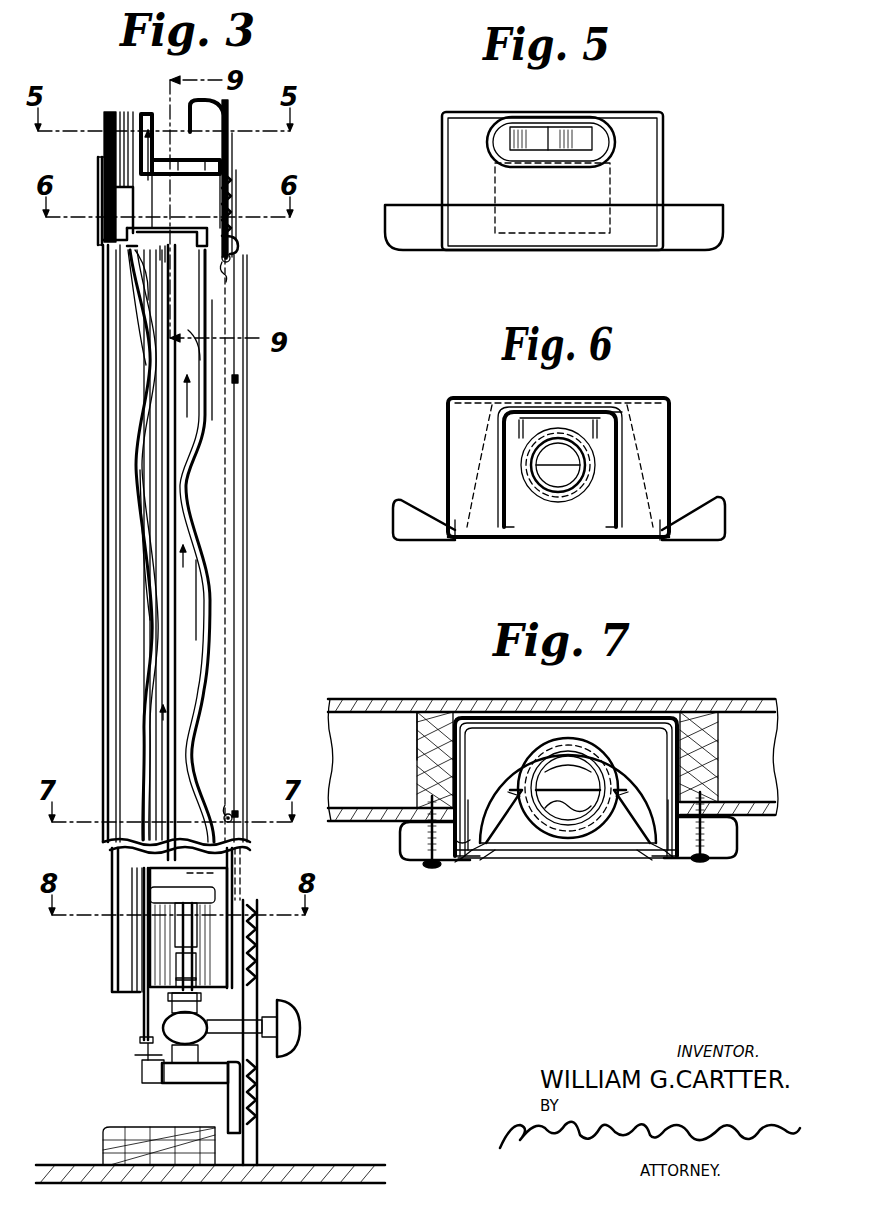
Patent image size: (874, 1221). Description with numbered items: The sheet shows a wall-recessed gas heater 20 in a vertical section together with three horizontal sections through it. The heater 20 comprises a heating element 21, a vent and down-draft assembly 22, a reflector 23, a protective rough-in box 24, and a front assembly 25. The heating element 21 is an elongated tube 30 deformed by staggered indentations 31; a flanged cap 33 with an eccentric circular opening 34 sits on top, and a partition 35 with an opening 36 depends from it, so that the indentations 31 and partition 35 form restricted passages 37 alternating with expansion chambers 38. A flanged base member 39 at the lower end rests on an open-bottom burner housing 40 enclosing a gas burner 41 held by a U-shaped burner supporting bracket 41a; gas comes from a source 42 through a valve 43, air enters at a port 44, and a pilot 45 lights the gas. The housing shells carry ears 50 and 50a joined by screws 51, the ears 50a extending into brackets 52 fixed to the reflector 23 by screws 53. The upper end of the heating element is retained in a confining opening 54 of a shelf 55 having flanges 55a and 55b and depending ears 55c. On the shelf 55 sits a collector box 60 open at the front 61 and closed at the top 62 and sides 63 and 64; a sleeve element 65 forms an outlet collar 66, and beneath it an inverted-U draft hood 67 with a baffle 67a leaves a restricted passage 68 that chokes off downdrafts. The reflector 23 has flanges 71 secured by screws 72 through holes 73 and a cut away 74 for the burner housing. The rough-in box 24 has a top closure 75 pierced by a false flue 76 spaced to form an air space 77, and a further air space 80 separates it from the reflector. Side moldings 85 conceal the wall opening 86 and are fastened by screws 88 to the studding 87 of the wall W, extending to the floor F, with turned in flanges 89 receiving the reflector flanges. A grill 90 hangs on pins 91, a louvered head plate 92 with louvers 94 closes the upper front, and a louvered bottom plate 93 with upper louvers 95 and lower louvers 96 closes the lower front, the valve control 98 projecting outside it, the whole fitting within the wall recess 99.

In FIG. 3, the heater 20 is at (248, 486).
In FIG. 5, the heater 20 is at (624, 248).
In FIG. 6, the heater 20 is at (562, 543).
In FIG. 7, the heater 20 is at (582, 860).
In FIG. 3, the heating element 21 is at (216, 402).
In FIG. 3, the vent and down-draft assembly 22 is at (230, 185).
In FIG. 3, the reflector 23 is at (114, 404).
In FIG. 6, the reflector 23 is at (488, 440).
In FIG. 7, the reflector 23 is at (545, 736).
In FIG. 3, the rough-in box 24 is at (103, 450).
In FIG. 5, the rough-in box 24 is at (479, 112).
In FIG. 6, the rough-in box 24 is at (490, 400).
In FIG. 7, the rough-in box 24 is at (590, 728).
In FIG. 3, the front assembly 25 is at (236, 427).
In FIG. 3, the tube 30 is at (213, 605).
In FIG. 7, the tube 30 is at (523, 754).
In FIG. 3, the indentations 31 is at (194, 733).
In FIG. 7, the indentations 31 is at (560, 805).
In FIG. 3, the annular flanged cap 33 is at (162, 248).
In FIG. 6, the annular flanged cap 33 is at (551, 482).
In FIG. 3, the circular opening 34 is at (166, 240).
In FIG. 6, the circular opening 34 is at (562, 482).
In FIG. 3, the partition 35 is at (162, 316).
In FIG. 6, the partition 35 is at (548, 478).
In FIG. 7, the partition 35 is at (582, 762).
In FIG. 3, the opening 36 is at (172, 300).
In FIG. 3, the restricted passages 37 is at (188, 740).
In FIG. 3, the expansion chambers 38 is at (196, 630).
In FIG. 3, the flanged base member 39 is at (234, 867).
In FIG. 7, the flanged base member 39 is at (596, 860).
In FIG. 3, the burner housing 40 is at (252, 908).
In FIG. 3, the gas burner 41 is at (152, 892).
In FIG. 3, the burner supporting bracket 41a is at (190, 980).
In FIG. 3, the source 42 is at (228, 1097).
In FIG. 3, the valve 43 is at (178, 1030).
In FIG. 3, the port 44 is at (176, 942).
In FIG. 3, the pilot 45 is at (143, 1003).
In FIG. 7, the ears 50 is at (616, 796).
In FIG. 7, the ears 50a is at (628, 788).
In FIG. 7, the screws 51 is at (630, 782).
In FIG. 7, the brackets 52 is at (640, 836).
In FIG. 7, the screws 53 is at (670, 860).
In FIG. 3, the confining opening 54 is at (112, 240).
In FIG. 3, the shelf 55 is at (238, 250).
In FIG. 6, the shelf 55 is at (640, 455).
In FIG. 6, the flange 55a is at (624, 405).
In FIG. 6, the flange 55b is at (590, 543).
In FIG. 6, the depending ears 55c is at (700, 510).
In FIG. 3, the collector box 60 is at (207, 162).
In FIG. 6, the collector box 60 is at (500, 540).
In FIG. 3, the front 61 is at (232, 200).
In FIG. 3, the top 62 is at (184, 162).
In FIG. 6, the side 63 is at (504, 512).
In FIG. 6, the side 64 is at (618, 512).
In FIG. 3, the sleeve element 65 is at (131, 114).
In FIG. 5, the sleeve element 65 is at (590, 122).
In FIG. 3, the outlet collar 66 is at (147, 128).
In FIG. 3, the draft hood 67 is at (103, 222).
In FIG. 5, the draft hood 67 is at (530, 127).
In FIG. 6, the draft hood 67 is at (622, 420).
In FIG. 3, the baffle 67a is at (103, 200).
In FIG. 5, the baffle 67a is at (560, 127).
In FIG. 3, the restricted passage 68 is at (210, 179).
In FIG. 7, the flanges 71 is at (664, 812).
In FIG. 3, the screws 72 is at (233, 822).
In FIG. 7, the screws 72 is at (466, 862).
In FIG. 3, the holes 73 is at (227, 806).
In FIG. 7, the holes 73 is at (642, 858).
In FIG. 3, the cut away 74 is at (132, 928).
In FIG. 3, the top closure 75 is at (233, 148).
In FIG. 5, the top closure 75 is at (458, 172).
In FIG. 3, the false flue 76 is at (104, 126).
In FIG. 3, the air space 77 is at (104, 144).
In FIG. 3, the air space 80 is at (118, 530).
In FIG. 7, the air space 80 is at (516, 718).
In FIG. 7, the side moldings 85 is at (733, 854).
In FIG. 7, the wall opening 86 is at (468, 712).
In FIG. 7, the studding 87 is at (718, 758).
In FIG. 7, the screws 88 is at (738, 840).
In FIG. 7, the turned in flanges 89 is at (466, 866).
In FIG. 3, the grill 90 is at (248, 545).
In FIG. 3, the pins 91 is at (243, 812).
In FIG. 3, the louvered head plate 92 is at (226, 112).
In FIG. 3, the louvered bottom plate 93 is at (257, 1138).
In FIG. 3, the louvers 94 is at (236, 216).
In FIG. 3, the upper louvers 95 is at (257, 955).
In FIG. 3, the louvers 96 is at (257, 1108).
In FIG. 3, the valve control 98 is at (282, 1010).
In FIG. 7, the wall recess 99 is at (632, 706).
In FIG. 3, the floor F is at (315, 1165).
In FIG. 7, the wall W is at (368, 822).